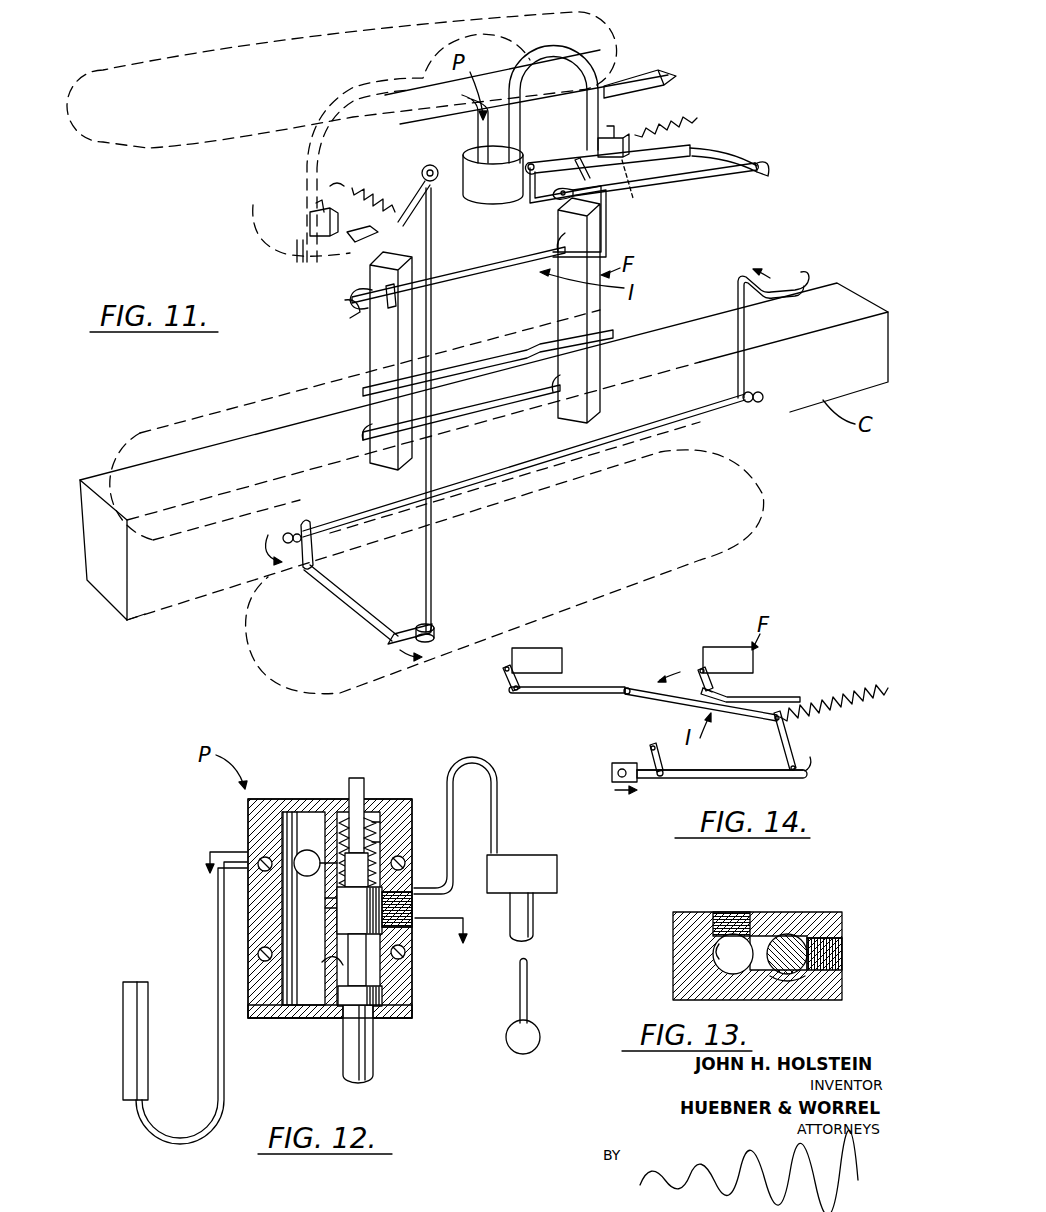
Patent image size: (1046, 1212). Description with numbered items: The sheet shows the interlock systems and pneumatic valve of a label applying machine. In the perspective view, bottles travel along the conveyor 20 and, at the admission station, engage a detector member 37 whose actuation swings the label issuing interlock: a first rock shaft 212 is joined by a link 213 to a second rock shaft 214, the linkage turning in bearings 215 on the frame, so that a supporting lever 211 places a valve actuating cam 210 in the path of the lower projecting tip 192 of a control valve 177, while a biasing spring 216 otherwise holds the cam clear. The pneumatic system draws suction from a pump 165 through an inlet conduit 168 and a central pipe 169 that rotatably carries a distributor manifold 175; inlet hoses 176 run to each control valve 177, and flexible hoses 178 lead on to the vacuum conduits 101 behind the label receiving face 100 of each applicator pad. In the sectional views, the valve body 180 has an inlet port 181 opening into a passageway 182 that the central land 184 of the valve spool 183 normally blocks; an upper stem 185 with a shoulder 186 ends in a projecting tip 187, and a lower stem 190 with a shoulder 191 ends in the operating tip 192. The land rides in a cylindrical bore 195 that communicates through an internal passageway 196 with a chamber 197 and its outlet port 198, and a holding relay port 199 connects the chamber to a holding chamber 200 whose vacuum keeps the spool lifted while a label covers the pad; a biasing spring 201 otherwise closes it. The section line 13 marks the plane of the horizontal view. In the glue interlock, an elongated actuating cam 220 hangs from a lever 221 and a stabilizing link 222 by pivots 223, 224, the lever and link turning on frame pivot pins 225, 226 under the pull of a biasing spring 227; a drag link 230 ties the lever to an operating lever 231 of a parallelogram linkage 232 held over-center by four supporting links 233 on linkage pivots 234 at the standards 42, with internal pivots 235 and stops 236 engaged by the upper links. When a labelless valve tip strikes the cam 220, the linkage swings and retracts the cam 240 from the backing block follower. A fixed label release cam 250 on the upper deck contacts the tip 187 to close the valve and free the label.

In FIG. 12, the section line 13— 13 is at (340, 893).
In FIG. 11, the conveyor 20 is at (272, 443).
In FIG. 11, the detector member 37 is at (783, 290).
In FIG. 11, the upright standards 42 is at (370, 362).
In FIG. 14, the upright standards 42 is at (562, 654).
In FIG. 12, the impermeable face 100 is at (124, 1014).
In FIG. 12, the vacuum conduits 101 is at (146, 1040).
In FIG. 12, the pump 165 is at (541, 1045).
In FIG. 12, the inlet conduit 168 is at (528, 992).
In FIG. 12, the central pipe 169 is at (527, 923).
In FIG. 11, the distributor manifold 175 is at (480, 204).
In FIG. 12, the distributor manifold 175 is at (547, 853).
In FIG. 11, the inlet hoses 176 is at (440, 52).
In FIG. 12, the inlet hoses 176 is at (493, 767).
In FIG. 11, the control valve 177 is at (303, 232).
In FIG. 14, the control valve 177 is at (645, 788).
In FIG. 12, the control valve 177 is at (253, 1020).
In FIG. 13, the control valve 177 is at (830, 911).
In FIG. 11, the flexible hoses 178 is at (295, 263).
In FIG. 12, the flexible hoses 178 is at (218, 988).
In FIG. 12, the valve body 180 is at (262, 822).
In FIG. 12, the inlet port 181 is at (413, 890).
In FIG. 13, the inlet port 181 is at (842, 938).
In FIG. 12, the passageway 182 is at (413, 922).
In FIG. 13, the passageway 182 is at (817, 957).
In FIG. 12, the valve spool 183 is at (340, 1040).
In FIG. 13, the valve spool 183 is at (787, 968).
In FIG. 12, the central land 184 is at (343, 907).
In FIG. 12, the upper stem 185 is at (364, 800).
In FIG. 12, the shoulder 186 is at (380, 808).
In FIG. 12, the projecting tip 187 is at (357, 777).
In FIG. 12, the lower stem 190 is at (367, 977).
In FIG. 12, the shoulder 191 is at (383, 1020).
In FIG. 12, the projecting tip 192 is at (373, 1062).
In FIG. 12, the cylindrical bore 195 is at (338, 975).
In FIG. 13, the cylindrical bore 195 is at (797, 937).
In FIG. 12, the internal passageway 196 is at (330, 902).
In FIG. 13, the internal passageway 196 is at (753, 937).
In FIG. 12, the chamber 197 is at (302, 848).
In FIG. 13, the chamber 197 is at (717, 950).
In FIG. 12, the outlet port 198 is at (300, 850).
In FIG. 13, the outlet port 198 is at (719, 944).
In FIG. 12, the holding relay port 199 is at (331, 818).
In FIG. 12, the holding chamber 200 is at (387, 827).
In FIG. 12, the biasing spring 201 is at (380, 847).
In FIG. 11, the valve actuating cam 210 is at (343, 247).
In FIG. 11, the supporting lever 211 is at (402, 182).
In FIG. 11, the first rock shaft 212 is at (503, 470).
In FIG. 11, the link 213 is at (337, 594).
In FIG. 11, the second rock shaft 214 is at (432, 550).
In FIG. 11, the bearings 215 is at (432, 180).
In FIG. 11, the biasing spring 216 is at (337, 185).
In FIG. 11, the actuating cam 220 is at (662, 168).
In FIG. 14, the actuating cam 220 is at (748, 774).
In FIG. 11, the lever 221 is at (698, 151).
In FIG. 14, the lever 221 is at (787, 740).
In FIG. 11, the stabilizing link 222 is at (580, 160).
In FIG. 14, the stabilizing link 222 is at (653, 760).
In FIG. 11, the pivot 223 is at (712, 166).
In FIG. 14, the pivot 223 is at (812, 768).
In FIG. 11, the pivot 224 is at (587, 176).
In FIG. 14, the pivot 224 is at (663, 773).
In FIG. 11, the pivot pin 225 is at (758, 168).
In FIG. 14, the pivot pin 225 is at (782, 753).
In FIG. 11, the pivot pin 226 is at (541, 164).
In FIG. 14, the pivot pin 226 is at (624, 694).
In FIG. 11, the biasing spring 227 is at (690, 115).
In FIG. 14, the biasing spring 227 is at (833, 685).
In FIG. 11, the drag link 230 is at (557, 163).
In FIG. 14, the drag link 230 is at (680, 707).
In FIG. 11, the operating lever 231 is at (546, 208).
In FIG. 11, the parallelogram linkage 232 is at (504, 262).
In FIG. 11, the supporting links 233 is at (357, 295).
In FIG. 14, the supporting links 233 is at (505, 679).
In FIG. 11, the linkage pivots 234 is at (393, 287).
In FIG. 14, the linkage pivots 234 is at (506, 670).
In FIG. 11, the pivots 235 is at (350, 318).
In FIG. 14, the pivots 235 is at (512, 694).
In FIG. 14, the stops 236 is at (525, 676).
In FIG. 11, the cam 240 is at (613, 335).
In FIG. 14, the cam 240 is at (767, 697).
In FIG. 11, the label release cam 250 is at (658, 70).